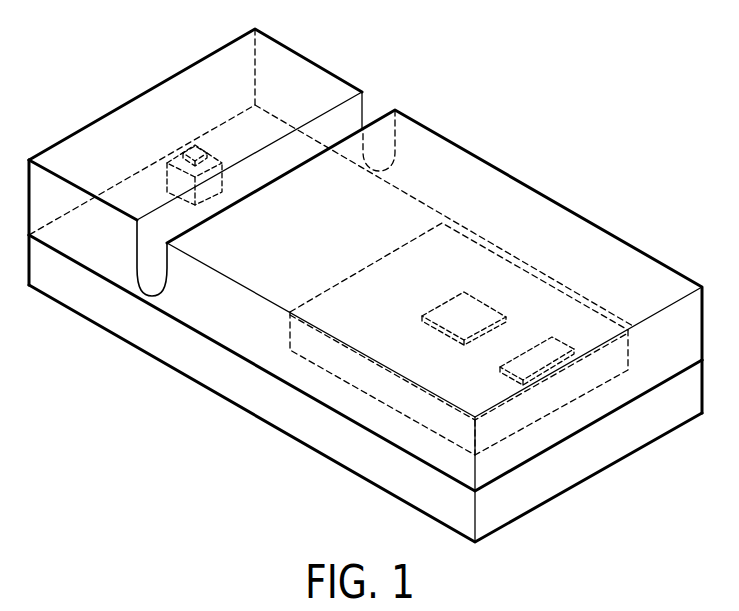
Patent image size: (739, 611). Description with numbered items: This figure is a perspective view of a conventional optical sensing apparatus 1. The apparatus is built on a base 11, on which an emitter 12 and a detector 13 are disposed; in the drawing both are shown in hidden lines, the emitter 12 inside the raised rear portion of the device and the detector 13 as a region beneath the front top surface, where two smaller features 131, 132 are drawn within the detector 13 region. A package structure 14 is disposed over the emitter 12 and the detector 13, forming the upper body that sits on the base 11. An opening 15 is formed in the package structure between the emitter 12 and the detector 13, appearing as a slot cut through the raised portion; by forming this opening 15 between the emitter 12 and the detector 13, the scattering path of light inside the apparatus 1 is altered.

The optical sensing apparatus 1 is at (365, 285).
The base 11 is at (583, 457).
The emitter 12 is at (186, 145).
The detector 13 is at (354, 270).
The first pad 131 is at (443, 306).
The second pad 132 is at (518, 358).
The package structure 14 is at (223, 311).
The opening 15 is at (377, 105).